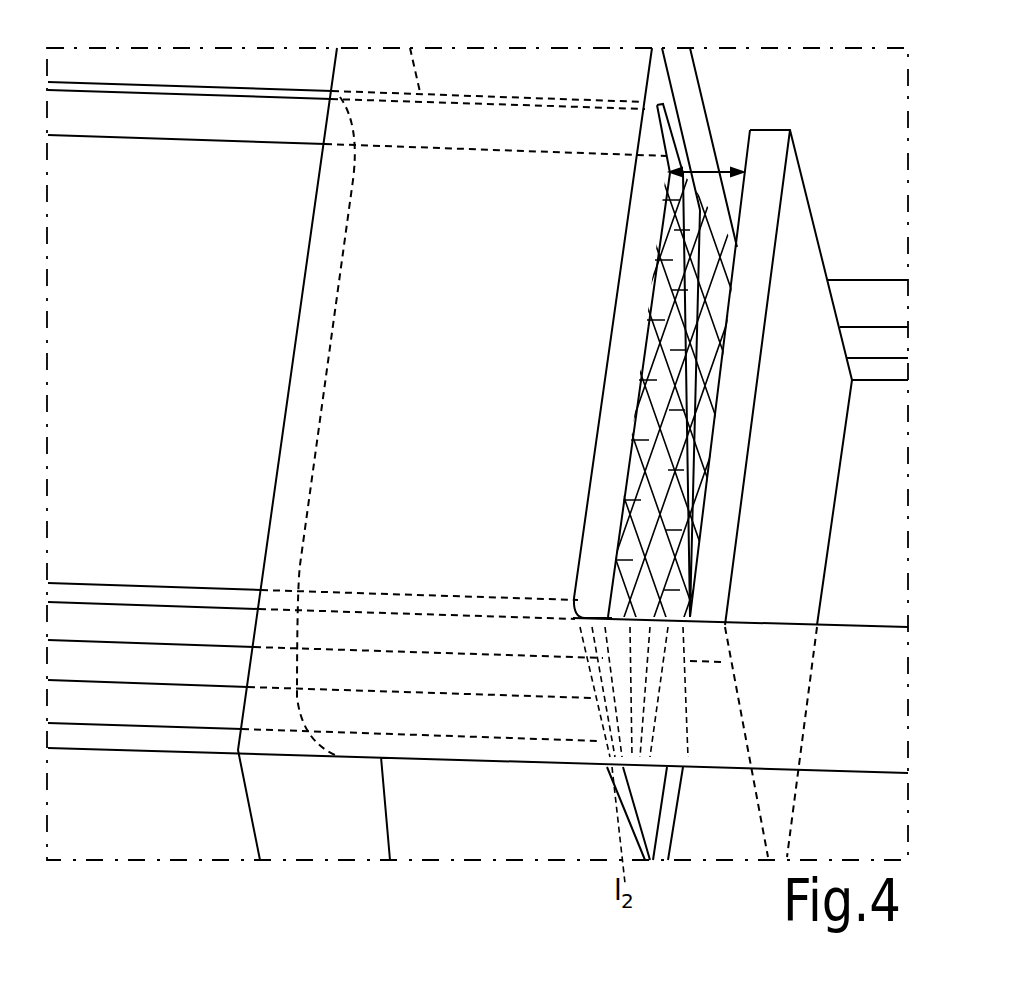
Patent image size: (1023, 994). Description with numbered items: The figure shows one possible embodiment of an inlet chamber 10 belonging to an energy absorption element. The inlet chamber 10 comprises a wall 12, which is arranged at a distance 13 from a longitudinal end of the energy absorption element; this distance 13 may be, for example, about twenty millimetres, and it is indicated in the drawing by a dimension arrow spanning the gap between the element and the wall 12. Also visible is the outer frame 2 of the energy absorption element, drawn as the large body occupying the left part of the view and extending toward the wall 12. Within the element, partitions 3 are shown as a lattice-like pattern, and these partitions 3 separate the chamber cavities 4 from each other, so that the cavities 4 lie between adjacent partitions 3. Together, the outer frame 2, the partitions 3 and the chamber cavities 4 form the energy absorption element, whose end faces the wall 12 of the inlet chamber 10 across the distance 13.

The outer frame 2 is at (168, 508).
The partitions 3 is at (680, 298).
The chamber cavities 4 is at (680, 372).
The inlet chamber 10 is at (722, 243).
The wall 12 is at (793, 423).
The distance 13 is at (717, 168).